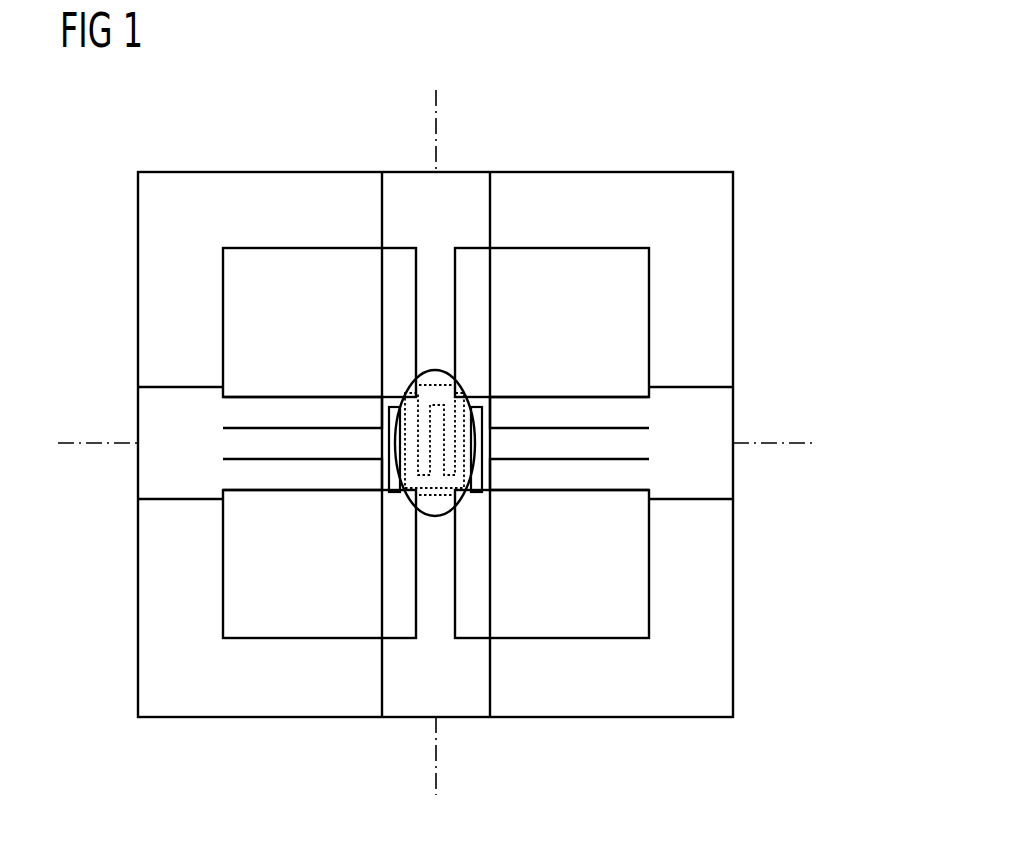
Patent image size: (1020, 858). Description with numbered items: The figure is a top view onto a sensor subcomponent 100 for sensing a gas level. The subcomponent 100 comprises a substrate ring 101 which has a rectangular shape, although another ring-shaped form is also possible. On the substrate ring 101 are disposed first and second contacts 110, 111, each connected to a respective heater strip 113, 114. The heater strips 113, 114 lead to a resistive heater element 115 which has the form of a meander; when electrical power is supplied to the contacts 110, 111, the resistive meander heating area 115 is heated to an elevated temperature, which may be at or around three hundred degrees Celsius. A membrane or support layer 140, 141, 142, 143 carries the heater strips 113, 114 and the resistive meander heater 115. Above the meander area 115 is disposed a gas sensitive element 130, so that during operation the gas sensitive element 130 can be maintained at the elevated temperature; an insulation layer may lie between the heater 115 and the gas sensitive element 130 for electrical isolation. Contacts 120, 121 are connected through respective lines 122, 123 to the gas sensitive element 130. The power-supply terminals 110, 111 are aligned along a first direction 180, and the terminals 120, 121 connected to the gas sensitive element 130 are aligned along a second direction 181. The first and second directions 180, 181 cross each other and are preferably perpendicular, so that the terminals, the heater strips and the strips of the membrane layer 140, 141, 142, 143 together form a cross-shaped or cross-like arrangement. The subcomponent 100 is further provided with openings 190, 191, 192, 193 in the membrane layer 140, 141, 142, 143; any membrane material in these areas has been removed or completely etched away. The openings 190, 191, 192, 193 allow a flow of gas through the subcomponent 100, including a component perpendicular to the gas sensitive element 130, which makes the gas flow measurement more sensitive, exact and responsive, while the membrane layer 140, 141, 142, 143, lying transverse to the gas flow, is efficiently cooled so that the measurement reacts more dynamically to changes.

The subcomponent 100 is at (680, 122).
The substrate ring 101 is at (240, 181).
The first contact 110 is at (147, 478).
The second contact 111 is at (723, 482).
The heater strip 113 is at (302, 438).
The heater strip 114 is at (603, 438).
The resistive heater element 115 is at (470, 405).
The contact 120 is at (468, 182).
The contact 121 is at (473, 708).
The line 122 is at (443, 315).
The line 123 is at (450, 552).
The gas sensitive element 130 is at (407, 498).
The membrane layer strip 140 is at (480, 276).
The membrane layer strip 141 is at (480, 600).
The membrane layer strip 142 is at (272, 487).
The membrane layer strip 143 is at (580, 480).
The first direction 180 is at (790, 440).
The second direction 181 is at (435, 775).
The opening 190 is at (325, 319).
The opening 191 is at (630, 316).
The opening 192 is at (325, 612).
The opening 193 is at (630, 606).